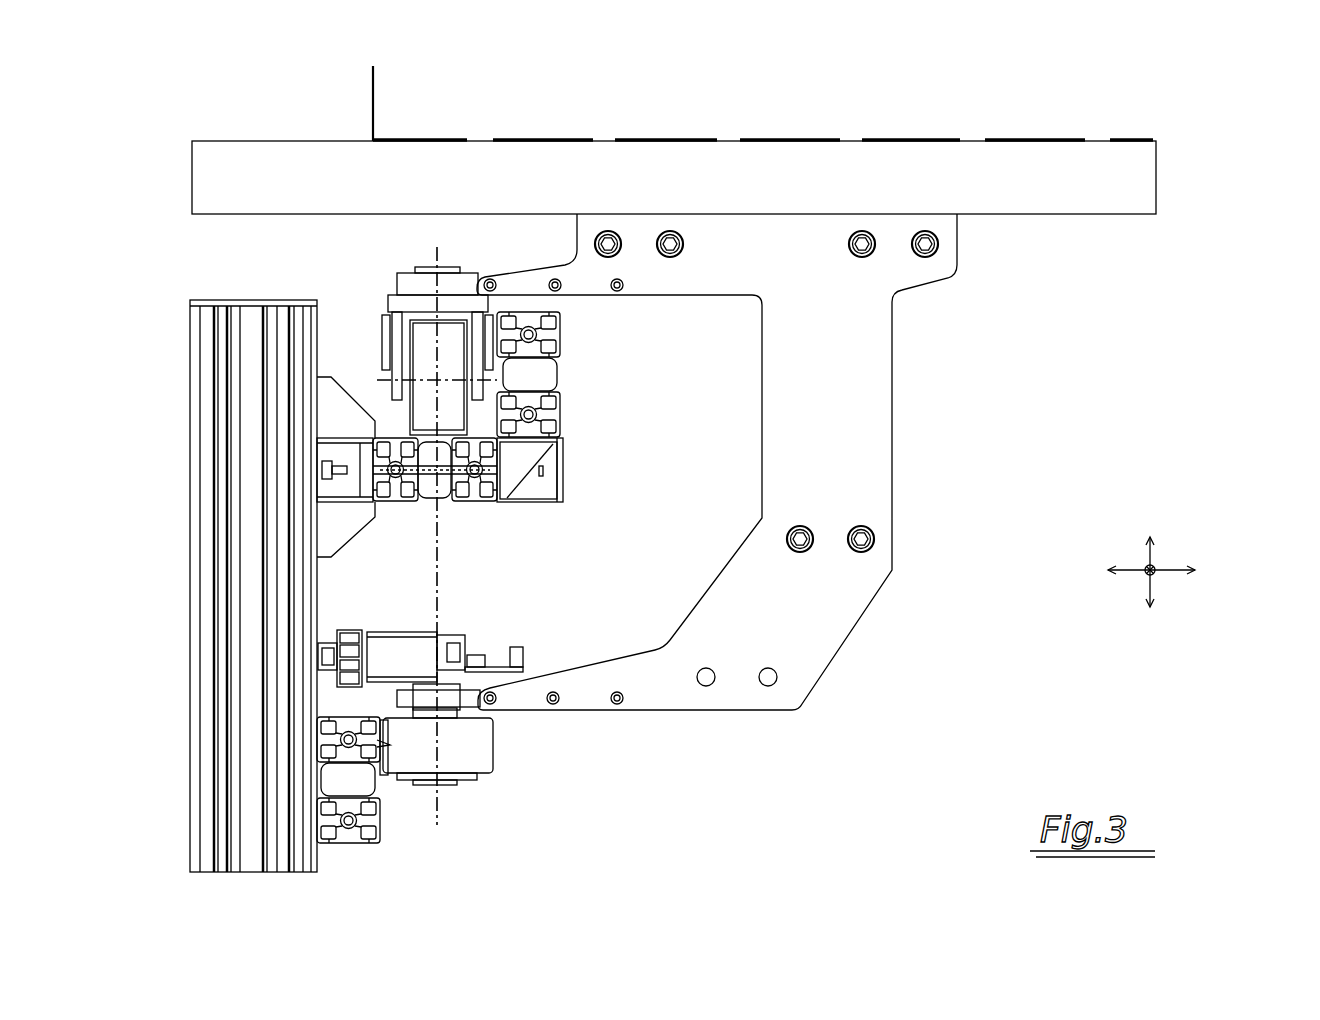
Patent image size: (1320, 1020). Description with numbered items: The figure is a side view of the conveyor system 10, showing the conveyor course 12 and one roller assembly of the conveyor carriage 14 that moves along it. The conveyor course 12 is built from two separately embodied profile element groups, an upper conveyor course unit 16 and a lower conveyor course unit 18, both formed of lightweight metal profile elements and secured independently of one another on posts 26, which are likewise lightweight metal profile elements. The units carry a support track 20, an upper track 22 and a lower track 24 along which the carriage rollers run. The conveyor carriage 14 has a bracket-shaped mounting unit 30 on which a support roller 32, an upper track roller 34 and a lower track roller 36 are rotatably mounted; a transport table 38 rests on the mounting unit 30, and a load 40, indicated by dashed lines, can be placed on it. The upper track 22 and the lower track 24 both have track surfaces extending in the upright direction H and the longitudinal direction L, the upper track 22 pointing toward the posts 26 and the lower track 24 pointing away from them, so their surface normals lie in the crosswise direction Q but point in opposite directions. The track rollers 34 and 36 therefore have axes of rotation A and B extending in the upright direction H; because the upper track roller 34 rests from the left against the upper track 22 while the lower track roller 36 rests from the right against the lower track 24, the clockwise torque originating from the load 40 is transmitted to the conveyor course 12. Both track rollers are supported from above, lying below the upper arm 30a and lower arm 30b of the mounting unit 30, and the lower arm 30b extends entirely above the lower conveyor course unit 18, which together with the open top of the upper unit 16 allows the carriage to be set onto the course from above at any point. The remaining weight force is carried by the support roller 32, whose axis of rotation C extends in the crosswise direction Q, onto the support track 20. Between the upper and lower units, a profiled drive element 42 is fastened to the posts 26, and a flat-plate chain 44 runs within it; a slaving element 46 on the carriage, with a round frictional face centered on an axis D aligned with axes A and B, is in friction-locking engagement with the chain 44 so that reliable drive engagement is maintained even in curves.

The conveyor system 10 is at (1234, 120).
The conveyor course 12 is at (160, 619).
The conveyor carriage 14 is at (975, 412).
The upper conveyor course unit 16 is at (560, 503).
The lower conveyor course unit 18 is at (378, 843).
The support track 20 is at (438, 432).
The upper track 22 is at (513, 365).
The lower track 24 is at (387, 742).
The posts 26 is at (208, 384).
The bracket-shaped mounting unit 30 is at (878, 494).
The upper arm 30a is at (648, 287).
The lower arm 30b is at (648, 700).
The support roller 32 is at (428, 364).
The upper track roller 34 is at (382, 323).
The lower track roller 36 is at (480, 750).
The transport table 38 is at (1068, 206).
The load 40 is at (387, 99).
The profiled drive element 42 is at (327, 631).
The flat-plate chain 44 is at (340, 690).
The slaving element 46 is at (385, 658).
The axis of rotation of the upper track roller A is at (437, 283).
The axis of rotation of the lower track roller B is at (438, 760).
The axis of rotation of the support roller C is at (386, 373).
The axis of the slaving element D is at (440, 650).
The upright direction H is at (1152, 538).
The longitudinal direction L is at (1155, 562).
The crosswise direction Q is at (1190, 572).